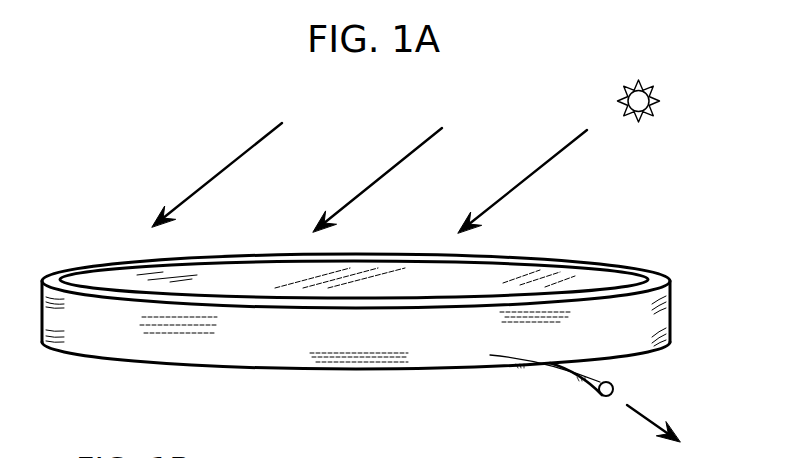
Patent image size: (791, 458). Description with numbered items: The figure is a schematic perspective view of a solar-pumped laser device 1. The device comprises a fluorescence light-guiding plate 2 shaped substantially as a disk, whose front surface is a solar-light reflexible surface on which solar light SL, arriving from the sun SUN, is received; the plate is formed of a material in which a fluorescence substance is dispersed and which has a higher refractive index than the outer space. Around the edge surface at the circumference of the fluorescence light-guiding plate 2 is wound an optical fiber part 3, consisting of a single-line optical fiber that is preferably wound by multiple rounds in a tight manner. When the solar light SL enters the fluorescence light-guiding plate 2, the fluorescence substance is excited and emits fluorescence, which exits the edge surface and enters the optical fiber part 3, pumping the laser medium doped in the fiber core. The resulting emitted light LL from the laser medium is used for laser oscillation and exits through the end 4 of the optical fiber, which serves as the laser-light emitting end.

The solar-pumped laser device 1 is at (371, 308).
The fluorescence light-guiding plate 2 is at (274, 276).
The optical fiber part 3 is at (658, 278).
The end of the optical fiber 4 is at (553, 383).
The solar light SL is at (369, 163).
The sun SUN is at (614, 101).
The emitted light LL is at (653, 430).